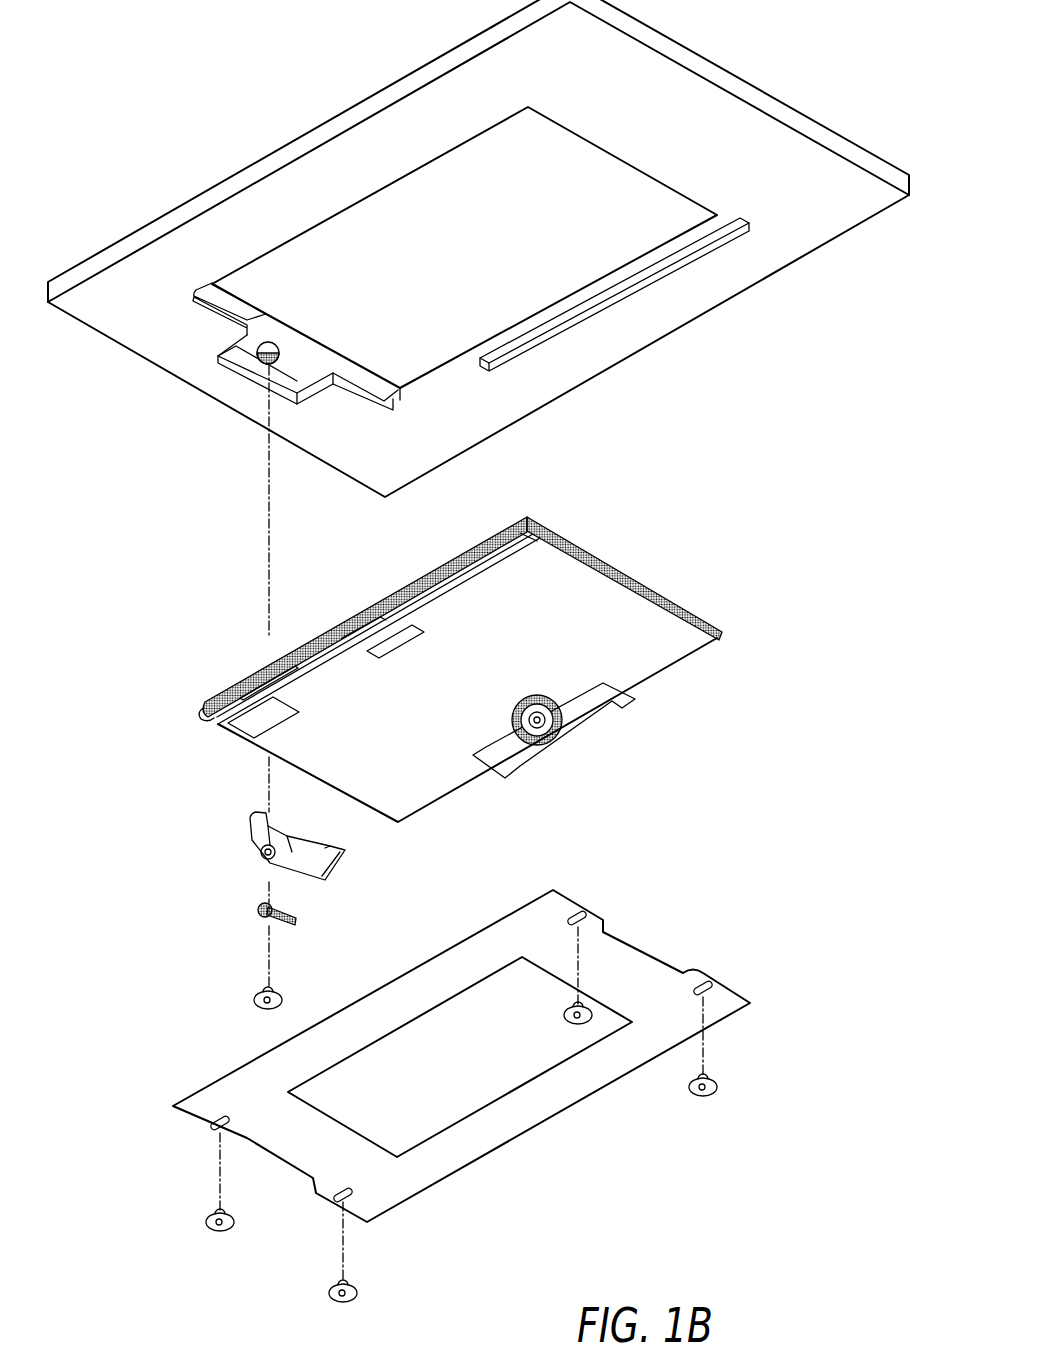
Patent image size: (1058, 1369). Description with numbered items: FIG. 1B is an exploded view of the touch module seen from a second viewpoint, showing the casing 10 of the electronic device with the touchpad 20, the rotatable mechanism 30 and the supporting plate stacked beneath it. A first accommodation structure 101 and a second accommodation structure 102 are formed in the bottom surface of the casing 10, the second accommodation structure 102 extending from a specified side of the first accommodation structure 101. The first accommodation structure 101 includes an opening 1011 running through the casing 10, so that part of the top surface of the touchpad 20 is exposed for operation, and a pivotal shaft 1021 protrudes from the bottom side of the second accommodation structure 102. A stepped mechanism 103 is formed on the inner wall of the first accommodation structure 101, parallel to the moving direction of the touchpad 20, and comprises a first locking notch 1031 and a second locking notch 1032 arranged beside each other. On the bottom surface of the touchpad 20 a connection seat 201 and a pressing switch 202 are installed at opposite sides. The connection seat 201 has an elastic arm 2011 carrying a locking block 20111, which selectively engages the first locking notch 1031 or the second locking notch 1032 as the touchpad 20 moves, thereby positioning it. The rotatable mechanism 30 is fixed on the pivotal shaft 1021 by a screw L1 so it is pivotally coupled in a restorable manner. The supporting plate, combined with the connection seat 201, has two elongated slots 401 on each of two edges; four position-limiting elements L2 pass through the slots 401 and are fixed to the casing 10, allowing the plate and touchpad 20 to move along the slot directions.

The casing 10 is at (838, 217).
The first accommodation structure 101 is at (637, 165).
The opening 1011 is at (553, 252).
The second accommodation structure 102 is at (233, 352).
The pivotal shaft 1021 is at (263, 370).
The stepped mechanism 103 is at (162, 240).
The first locking notch 1031 is at (212, 283).
The second locking notch 1032 is at (185, 292).
The touchpad 20 is at (443, 656).
The connection seat 201 is at (538, 524).
The elastic arm 2011 is at (307, 619).
The locking block 20111 is at (200, 704).
The pressing switch 202 is at (542, 728).
The rotatable mechanism 30 is at (240, 813).
The elongated slot 401 is at (212, 1134).
The screw L1 is at (255, 998).
The position-limiting element L2 is at (205, 1221).